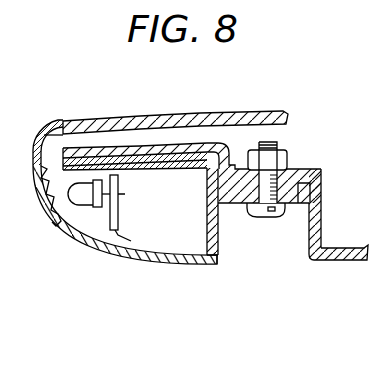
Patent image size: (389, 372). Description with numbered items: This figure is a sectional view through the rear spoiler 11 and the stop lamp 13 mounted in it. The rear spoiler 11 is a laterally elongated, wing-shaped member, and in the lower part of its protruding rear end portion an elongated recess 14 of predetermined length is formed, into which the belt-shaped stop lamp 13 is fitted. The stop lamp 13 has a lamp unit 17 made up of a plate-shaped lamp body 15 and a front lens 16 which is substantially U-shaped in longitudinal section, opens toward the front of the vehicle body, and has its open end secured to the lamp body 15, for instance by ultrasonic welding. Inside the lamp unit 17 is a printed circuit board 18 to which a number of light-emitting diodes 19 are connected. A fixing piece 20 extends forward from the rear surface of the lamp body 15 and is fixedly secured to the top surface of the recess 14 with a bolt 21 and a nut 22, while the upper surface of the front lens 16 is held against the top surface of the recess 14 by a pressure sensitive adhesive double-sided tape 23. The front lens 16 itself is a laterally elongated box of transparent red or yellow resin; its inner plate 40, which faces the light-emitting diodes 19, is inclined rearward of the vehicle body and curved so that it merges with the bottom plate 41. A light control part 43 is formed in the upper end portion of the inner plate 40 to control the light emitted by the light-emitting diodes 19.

The rear spoiler 11 is at (218, 110).
The stop lamp 13 is at (110, 307).
The elongated recess 14 is at (307, 253).
The lamp body 15 is at (218, 238).
The front lens 16 is at (191, 264).
The lamp unit 17 is at (255, 248).
The printed circuit board 18 is at (123, 239).
The light-emitting diode 19 is at (81, 206).
The fixing piece 20 is at (308, 192).
The bolt 21 is at (256, 218).
The nut 22 is at (285, 156).
The pressure sensitive adhesive double-sided tape 23 is at (148, 152).
The inner plate 40 is at (58, 225).
The bottom plate 41 is at (161, 248).
The light control part 43 is at (47, 195).